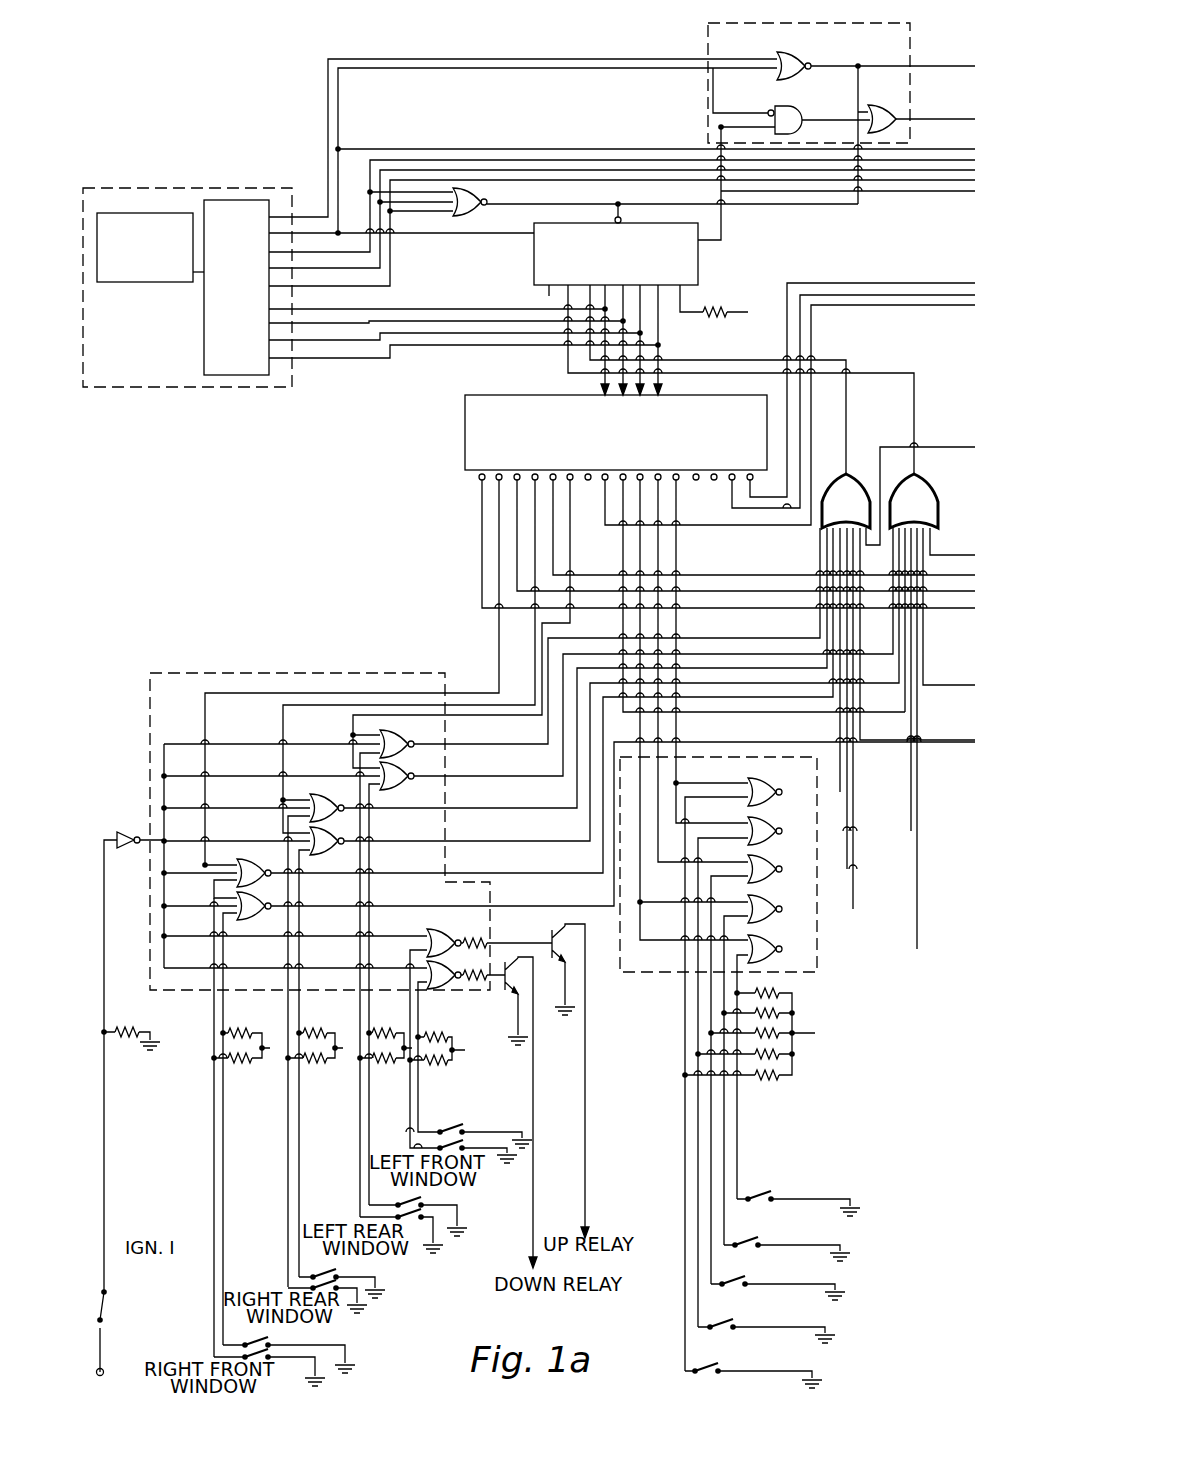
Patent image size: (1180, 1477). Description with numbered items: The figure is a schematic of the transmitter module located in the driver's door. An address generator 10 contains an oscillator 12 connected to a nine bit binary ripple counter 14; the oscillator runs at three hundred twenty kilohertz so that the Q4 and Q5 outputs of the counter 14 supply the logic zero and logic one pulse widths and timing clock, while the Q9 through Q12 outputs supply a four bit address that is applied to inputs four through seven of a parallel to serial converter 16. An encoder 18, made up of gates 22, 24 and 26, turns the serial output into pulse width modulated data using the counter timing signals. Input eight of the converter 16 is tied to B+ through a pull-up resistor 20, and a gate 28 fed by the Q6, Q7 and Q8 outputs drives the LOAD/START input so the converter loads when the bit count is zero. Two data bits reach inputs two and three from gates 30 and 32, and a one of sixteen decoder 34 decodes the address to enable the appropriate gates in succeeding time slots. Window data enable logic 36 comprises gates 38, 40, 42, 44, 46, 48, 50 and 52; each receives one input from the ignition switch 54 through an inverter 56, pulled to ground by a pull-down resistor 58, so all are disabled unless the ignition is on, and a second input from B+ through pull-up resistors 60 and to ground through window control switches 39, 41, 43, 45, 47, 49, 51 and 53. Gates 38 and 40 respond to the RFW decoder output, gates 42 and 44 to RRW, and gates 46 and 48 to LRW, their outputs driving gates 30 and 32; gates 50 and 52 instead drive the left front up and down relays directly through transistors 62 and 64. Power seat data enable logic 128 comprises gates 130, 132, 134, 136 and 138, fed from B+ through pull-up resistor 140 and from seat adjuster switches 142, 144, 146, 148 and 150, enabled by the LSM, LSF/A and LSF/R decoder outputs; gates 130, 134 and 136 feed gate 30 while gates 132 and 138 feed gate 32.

The address generator 10 is at (187, 256).
The oscillator 12 is at (160, 276).
The nine bit binary ripple counter 14 is at (216, 340).
The parallel to serial converter 16 is at (536, 261).
The encoder 18 is at (798, 83).
The pull-up resistor 20 is at (736, 304).
The gate 22 is at (812, 65).
The gate 24 is at (800, 124).
The gate 26 is at (891, 113).
The gate 28 is at (484, 206).
The gate 30 is at (850, 490).
The gate 32 is at (912, 494).
The 1 of 16 decoder 34 is at (466, 405).
The window data enable logic 36 is at (562, 1015).
The gate 38 is at (252, 862).
The right front window control switch 39 is at (290, 1356).
The gate 40 is at (246, 918).
The window control switch 41 is at (262, 1342).
The gate 42 is at (326, 798).
The window control switch 43 is at (340, 1288).
The gate 44 is at (325, 856).
The window control switch 45 is at (325, 1276).
The gate 46 is at (396, 740).
The window control switch 47 is at (426, 1215).
The gate 48 is at (400, 784).
The left rear window switch 49 is at (410, 1205).
The gate 50 is at (434, 934).
The window control switch 51 is at (462, 1144).
The gate 52 is at (434, 988).
The window control switch 53 is at (455, 1128).
The ignition switch 54 is at (110, 1308).
The inverter 56 is at (126, 830).
The pull-down resistor 58 is at (122, 1042).
The pull-up resistors 60 is at (240, 1072).
The transistor 62 is at (550, 934).
The transistor 64 is at (506, 988).
The power seat data enable logic 128 is at (754, 916).
The gate 130 is at (752, 786).
The gate 132 is at (752, 826).
The gate 134 is at (760, 862).
The gate 136 is at (760, 902).
The gate 138 is at (808, 956).
The pull-up resistor 140 is at (772, 1079).
The seat adjuster switch 142 is at (708, 1368).
The seat adjuster switch 144 is at (722, 1322).
The seat adjuster switch 146 is at (735, 1280).
The seat adjuster switch 148 is at (748, 1240).
The seat adjuster switch 150 is at (760, 1190).